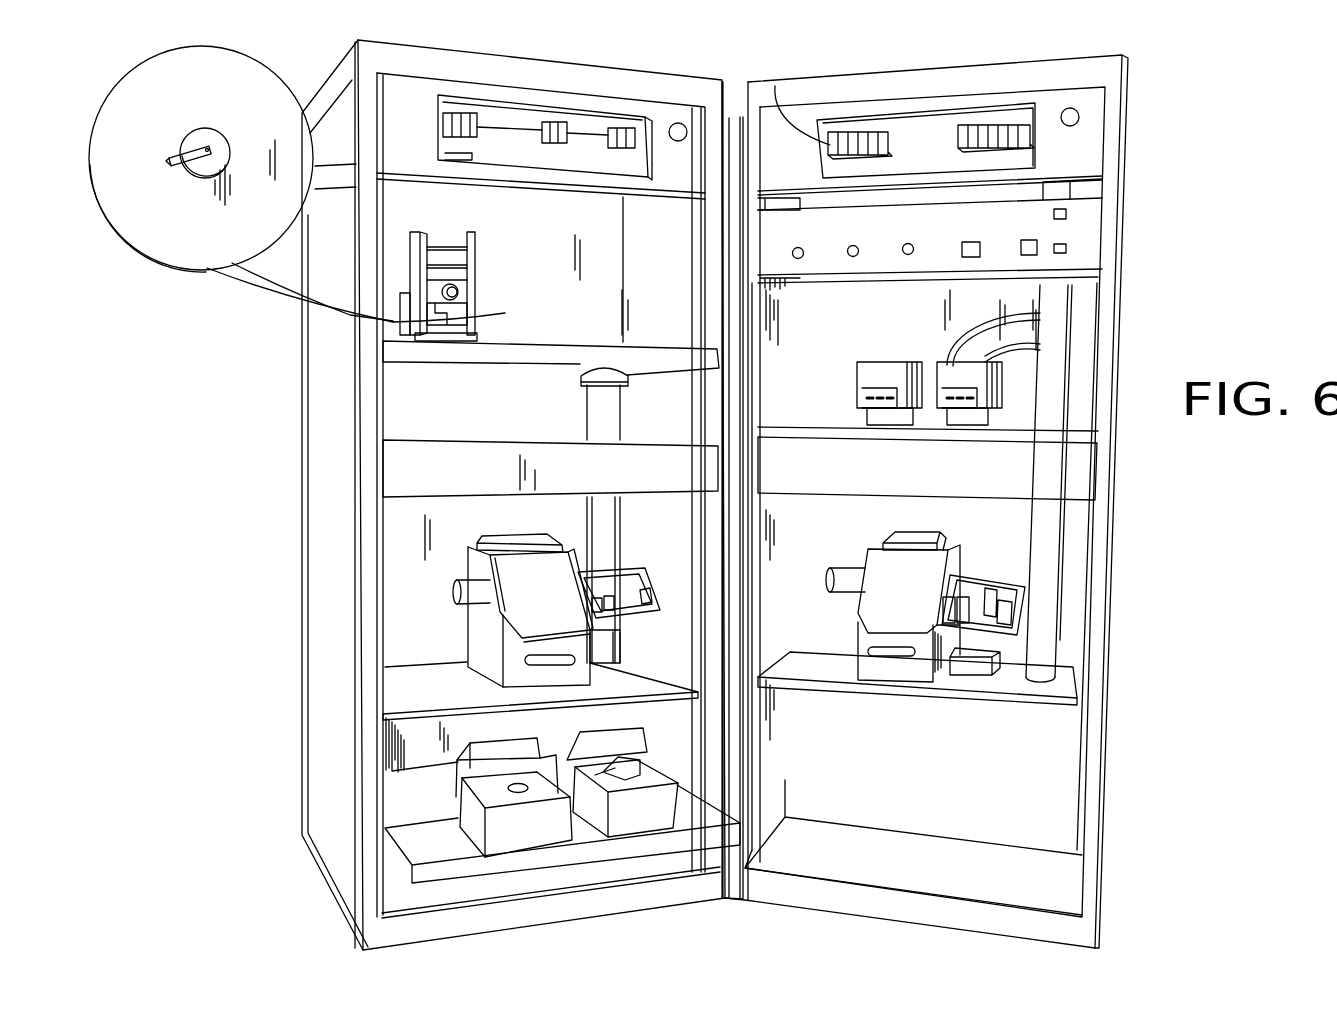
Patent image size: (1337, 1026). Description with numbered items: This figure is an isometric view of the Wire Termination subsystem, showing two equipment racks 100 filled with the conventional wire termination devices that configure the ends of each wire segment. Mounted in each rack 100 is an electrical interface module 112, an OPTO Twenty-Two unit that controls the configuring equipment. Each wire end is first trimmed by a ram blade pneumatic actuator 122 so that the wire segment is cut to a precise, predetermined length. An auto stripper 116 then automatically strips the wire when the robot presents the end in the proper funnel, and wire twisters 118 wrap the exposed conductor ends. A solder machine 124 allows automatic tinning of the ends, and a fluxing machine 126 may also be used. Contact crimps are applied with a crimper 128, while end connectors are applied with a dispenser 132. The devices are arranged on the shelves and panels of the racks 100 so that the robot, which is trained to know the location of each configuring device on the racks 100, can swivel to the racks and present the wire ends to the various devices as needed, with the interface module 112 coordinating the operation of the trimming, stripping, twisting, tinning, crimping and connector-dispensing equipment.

The equipment rack 100 is at (602, 63).
The electrical interface module 112 is at (632, 136).
The auto stripper 116 is at (947, 368).
The wire twister 118 is at (904, 247).
The ram blade pneumatic actuator 122 is at (1025, 246).
The solder machine 124 is at (527, 840).
The fluxing machine 126 is at (643, 823).
The crimper 128 is at (517, 565).
The dispenser 132 is at (484, 282).